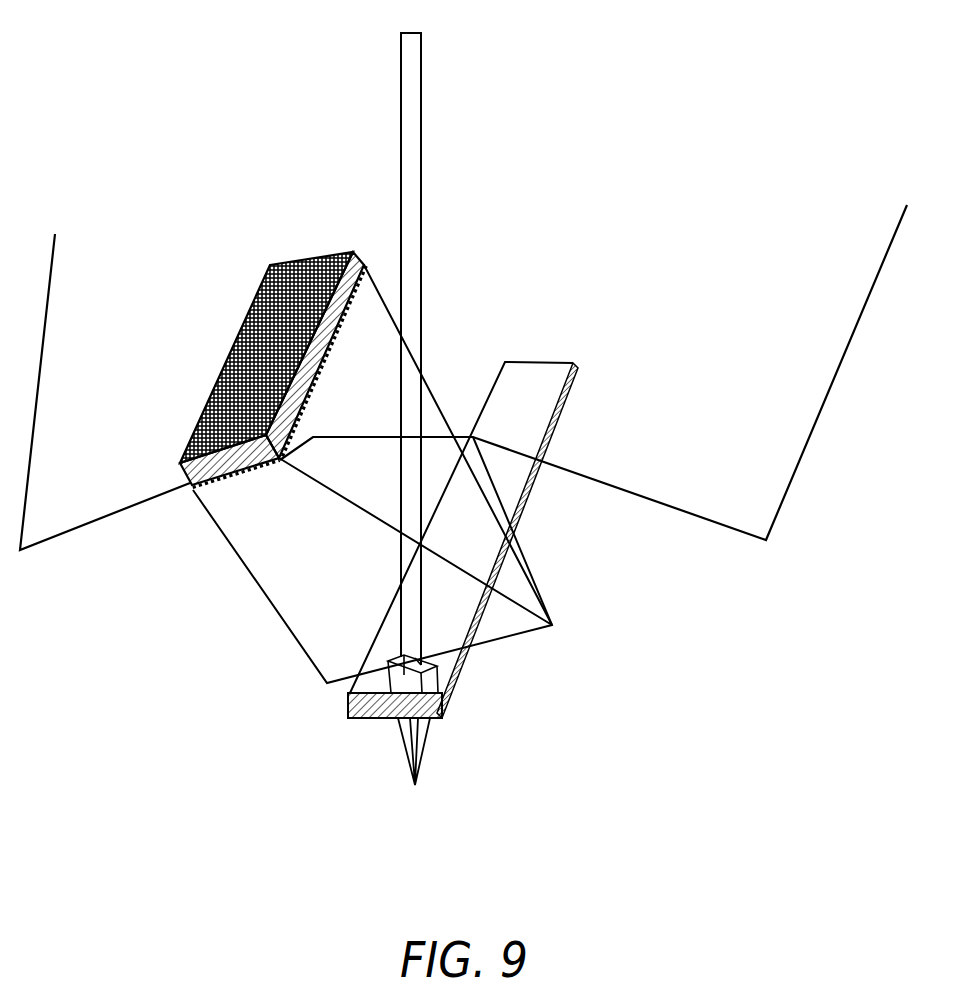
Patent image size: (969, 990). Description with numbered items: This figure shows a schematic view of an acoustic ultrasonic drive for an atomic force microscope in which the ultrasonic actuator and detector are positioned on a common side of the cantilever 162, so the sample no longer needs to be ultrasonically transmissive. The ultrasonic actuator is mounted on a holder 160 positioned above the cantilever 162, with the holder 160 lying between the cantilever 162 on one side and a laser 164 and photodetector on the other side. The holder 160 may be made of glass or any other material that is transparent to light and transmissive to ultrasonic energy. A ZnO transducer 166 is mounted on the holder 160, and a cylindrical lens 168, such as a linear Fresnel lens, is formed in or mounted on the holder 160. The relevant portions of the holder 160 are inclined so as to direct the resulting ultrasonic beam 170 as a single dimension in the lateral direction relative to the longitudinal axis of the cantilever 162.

The holder 160 is at (822, 412).
The cantilever 162 is at (521, 520).
The laser 164 is at (420, 80).
The ZnO transducer 166 is at (284, 262).
The cylindrical lens 168 is at (190, 492).
The ultrasonic beam 170 is at (263, 600).